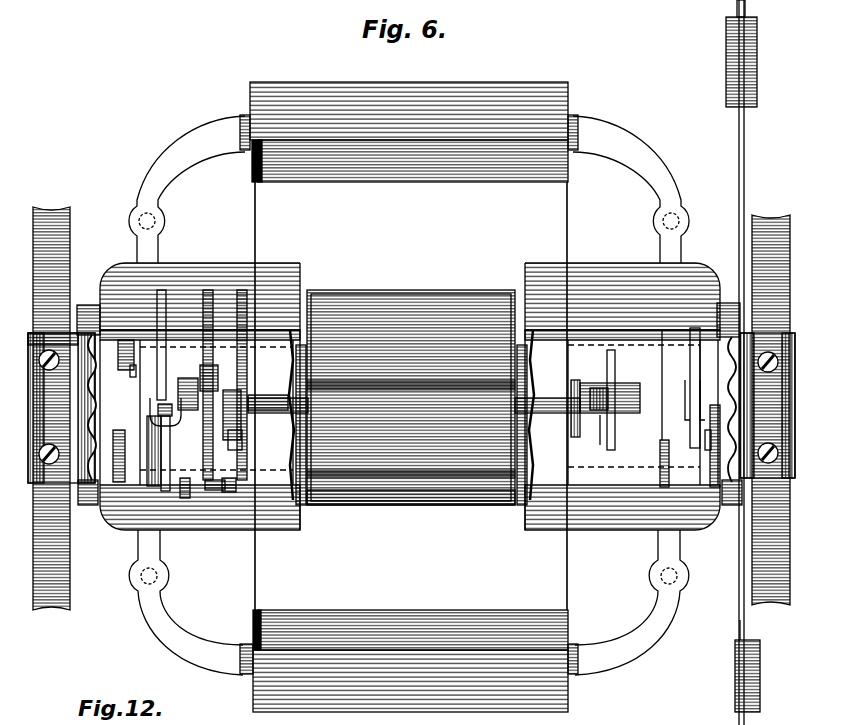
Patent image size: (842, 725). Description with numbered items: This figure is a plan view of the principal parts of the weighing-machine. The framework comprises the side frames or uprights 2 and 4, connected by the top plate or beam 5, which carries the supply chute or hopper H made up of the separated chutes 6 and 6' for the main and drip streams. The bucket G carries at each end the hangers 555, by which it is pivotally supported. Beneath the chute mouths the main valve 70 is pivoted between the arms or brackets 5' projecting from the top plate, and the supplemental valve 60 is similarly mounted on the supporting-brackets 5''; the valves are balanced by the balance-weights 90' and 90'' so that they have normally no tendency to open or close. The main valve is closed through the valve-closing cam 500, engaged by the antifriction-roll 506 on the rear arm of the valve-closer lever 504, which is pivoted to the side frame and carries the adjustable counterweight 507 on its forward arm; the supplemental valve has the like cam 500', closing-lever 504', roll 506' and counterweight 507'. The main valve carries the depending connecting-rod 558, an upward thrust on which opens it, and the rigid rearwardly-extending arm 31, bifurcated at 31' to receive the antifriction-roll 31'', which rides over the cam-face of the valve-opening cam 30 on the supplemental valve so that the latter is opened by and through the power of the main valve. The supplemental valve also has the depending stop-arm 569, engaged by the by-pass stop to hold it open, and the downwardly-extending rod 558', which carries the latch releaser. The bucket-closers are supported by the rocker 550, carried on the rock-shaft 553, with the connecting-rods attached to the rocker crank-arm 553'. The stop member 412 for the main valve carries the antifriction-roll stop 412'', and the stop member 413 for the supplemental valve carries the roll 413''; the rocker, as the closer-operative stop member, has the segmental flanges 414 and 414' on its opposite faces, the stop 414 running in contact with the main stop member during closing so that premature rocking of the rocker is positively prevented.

The side frame 2 is at (60, 570).
The side frame 4 is at (762, 578).
The top plate 5 is at (68, 408).
The arms or brackets 5' is at (408, 284).
The supporting-brackets 5'' is at (410, 518).
The chute 6 is at (411, 380).
The chute 6' is at (411, 517).
The valve-opening cam 30 is at (161, 466).
The rearwardly-extending arm 31 is at (149, 357).
The bifurcation 31' is at (180, 426).
The antifriction-roll 31'' is at (184, 453).
The supplemental valve 60 is at (303, 510).
The main valve 70 is at (302, 286).
The balance-weight 90' is at (410, 288).
The balance-weight 90'' is at (410, 525).
The stop member 412 is at (266, 358).
The antifriction-roll stop 412'' is at (261, 449).
The stop member 413 is at (213, 384).
The antifriction-roll stop 413'' is at (225, 369).
The stop 414 is at (240, 516).
The stop 414' is at (185, 517).
The valve-closing cam 500 is at (635, 400).
The valve-closing cam 500' is at (653, 464).
The valve-closer lever 504 is at (717, 362).
The closing-lever 504' is at (711, 627).
The antifriction-roll 506 is at (668, 388).
The cam-engaging roll 506' is at (663, 446).
The adjustable counterweight 507 is at (714, 53).
The counterweight 507' is at (725, 676).
The rocker 550 is at (216, 492).
The rock-shaft 553 is at (255, 419).
The rocker crank-arm 553' is at (189, 379).
The hangers 555 is at (158, 624).
The connecting-rod 558 is at (116, 365).
The downwardly-extending rod 558' is at (112, 500).
The stop-arm 569 is at (616, 505).
The bucket G is at (334, 625).
The supply chute or hopper H is at (358, 300).